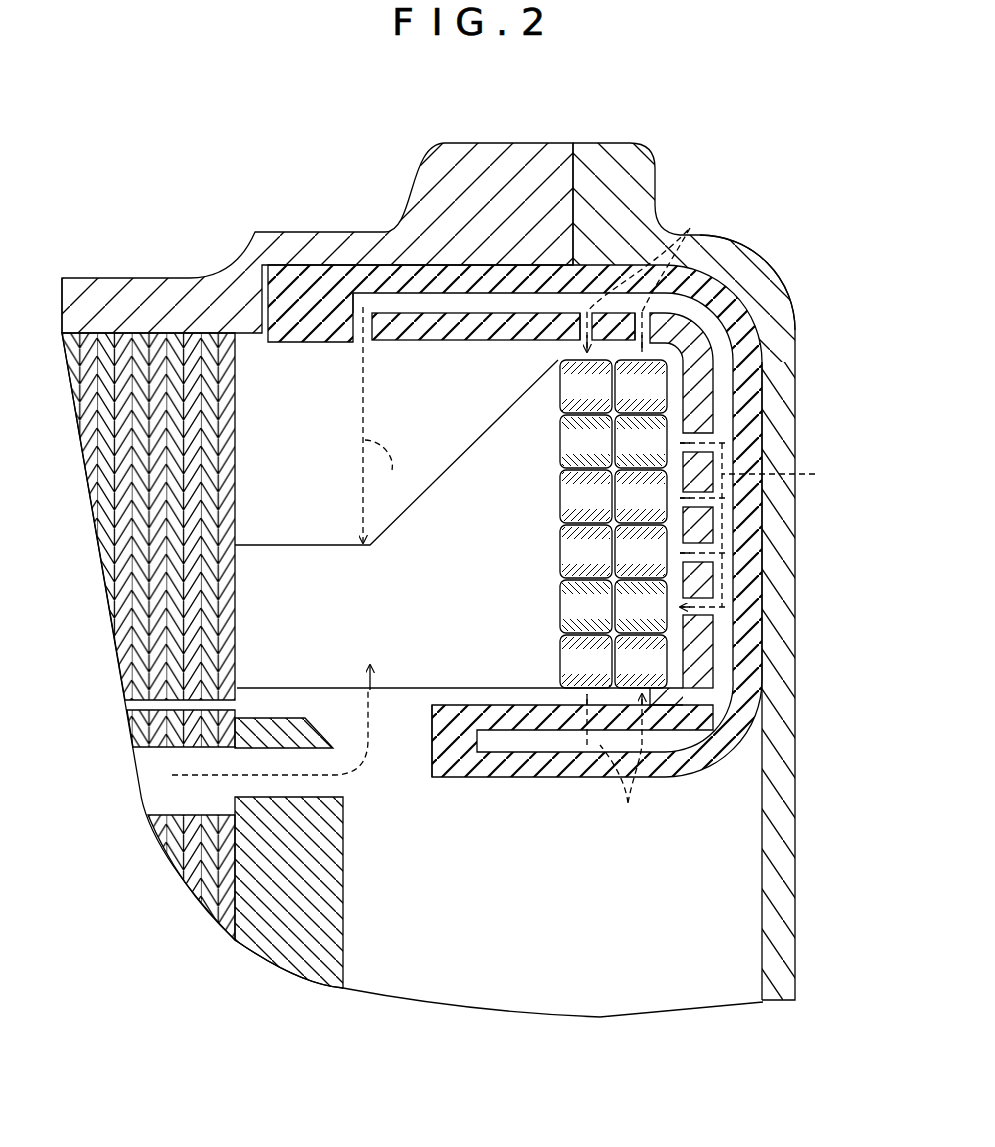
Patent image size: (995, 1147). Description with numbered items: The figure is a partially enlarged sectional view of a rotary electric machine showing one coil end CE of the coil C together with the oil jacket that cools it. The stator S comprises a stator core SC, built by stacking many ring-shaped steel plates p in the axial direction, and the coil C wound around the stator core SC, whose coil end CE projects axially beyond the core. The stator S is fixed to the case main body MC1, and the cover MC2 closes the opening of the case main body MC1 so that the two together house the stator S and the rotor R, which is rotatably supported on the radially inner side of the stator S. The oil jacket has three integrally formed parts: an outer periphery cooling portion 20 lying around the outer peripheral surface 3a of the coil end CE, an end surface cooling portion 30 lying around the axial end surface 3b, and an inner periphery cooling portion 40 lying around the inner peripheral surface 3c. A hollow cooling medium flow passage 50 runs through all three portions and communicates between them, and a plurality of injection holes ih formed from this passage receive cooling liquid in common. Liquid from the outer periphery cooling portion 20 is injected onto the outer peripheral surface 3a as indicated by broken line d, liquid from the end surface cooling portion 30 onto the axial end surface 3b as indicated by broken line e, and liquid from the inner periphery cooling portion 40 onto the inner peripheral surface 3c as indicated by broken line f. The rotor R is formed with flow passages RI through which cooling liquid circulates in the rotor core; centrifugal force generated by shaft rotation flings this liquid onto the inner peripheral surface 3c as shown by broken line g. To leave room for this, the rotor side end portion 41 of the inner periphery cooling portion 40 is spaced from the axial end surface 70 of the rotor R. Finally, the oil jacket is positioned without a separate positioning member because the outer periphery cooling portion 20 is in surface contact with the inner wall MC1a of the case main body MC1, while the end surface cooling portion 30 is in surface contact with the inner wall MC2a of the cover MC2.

The case main body MC1 is at (226, 250).
The inner wall of the case main body MC1a is at (322, 296).
The cover MC2 is at (795, 860).
The inner wall of the cover MC2a is at (750, 522).
The outer periphery cooling portion 20 is at (448, 260).
The end surface cooling portion 30 is at (768, 399).
The inner periphery cooling portion 40 is at (598, 780).
The rotor side end portion 41 is at (432, 745).
The cooling medium flow passage 50 is at (707, 285).
The outer peripheral surface of the coil end 3a is at (305, 538).
The axial end surface of the coil end 3b is at (708, 430).
The inner peripheral surface of the coil end 3c is at (661, 695).
The axial end surface of the rotor 70 is at (343, 924).
The rotor R is at (184, 908).
The flow passages in the rotor core RI is at (147, 787).
The stator S is at (140, 330).
The stator core SC is at (240, 392).
The ring-shaped steel plates p is at (142, 330).
The coil C is at (560, 613).
The coil end CE is at (342, 612).
The injection holes ih is at (368, 345).
The broken line d is at (531, 372).
The broken line e is at (757, 525).
The broken line f is at (614, 762).
The broken line g is at (286, 720).